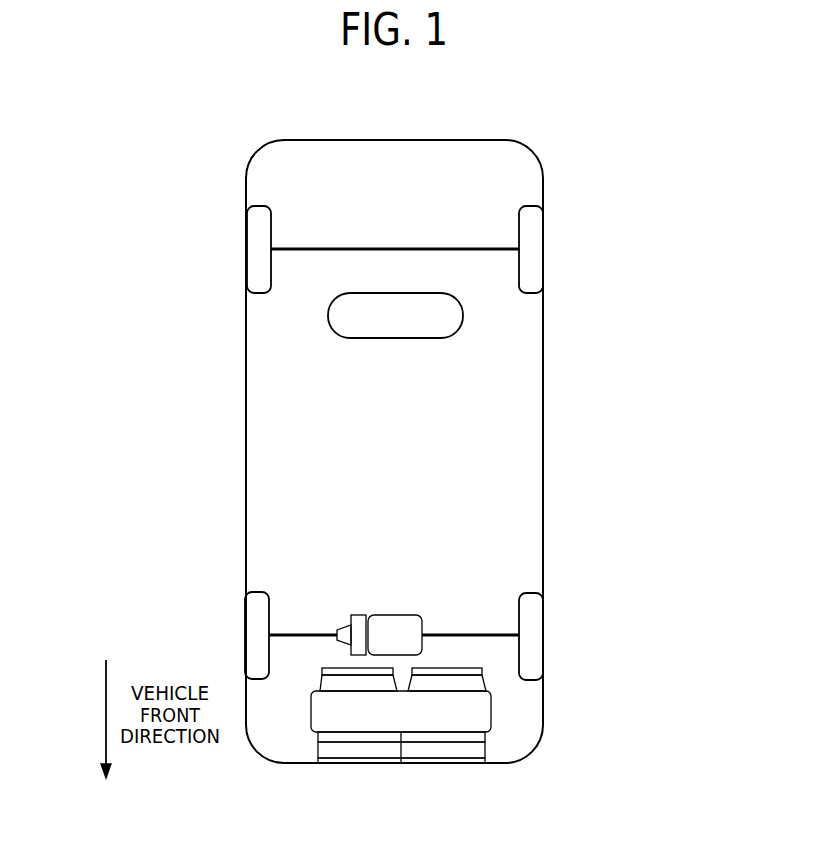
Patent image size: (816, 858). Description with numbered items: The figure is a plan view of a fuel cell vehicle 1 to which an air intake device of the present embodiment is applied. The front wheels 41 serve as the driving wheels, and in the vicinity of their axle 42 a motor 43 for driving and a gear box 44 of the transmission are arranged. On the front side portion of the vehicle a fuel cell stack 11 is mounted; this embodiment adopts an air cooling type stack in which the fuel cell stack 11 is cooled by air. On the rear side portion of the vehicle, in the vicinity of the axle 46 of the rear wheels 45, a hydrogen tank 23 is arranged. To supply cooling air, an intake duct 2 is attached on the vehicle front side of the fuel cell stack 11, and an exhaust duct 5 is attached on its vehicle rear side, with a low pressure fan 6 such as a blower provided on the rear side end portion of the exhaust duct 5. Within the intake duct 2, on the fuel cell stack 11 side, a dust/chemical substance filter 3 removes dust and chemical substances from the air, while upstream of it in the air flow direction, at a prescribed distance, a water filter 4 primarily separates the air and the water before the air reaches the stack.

The fuel cell vehicle 1 is at (607, 147).
The intake duct 2 is at (487, 749).
The dust/chemical substance filter 3 is at (487, 736).
The water filter 4 is at (497, 763).
The exhaust duct 5 is at (313, 689).
The low pressure fan 6 is at (337, 668).
The fuel cell stack 11 is at (478, 712).
The hydrogen tank 23 is at (395, 338).
The front wheels 41 is at (256, 621).
The axle 42 is at (328, 634).
The motor 43 is at (400, 624).
The gear box 44 is at (362, 624).
The rear wheels 45 is at (247, 242).
The axle 46 is at (397, 247).